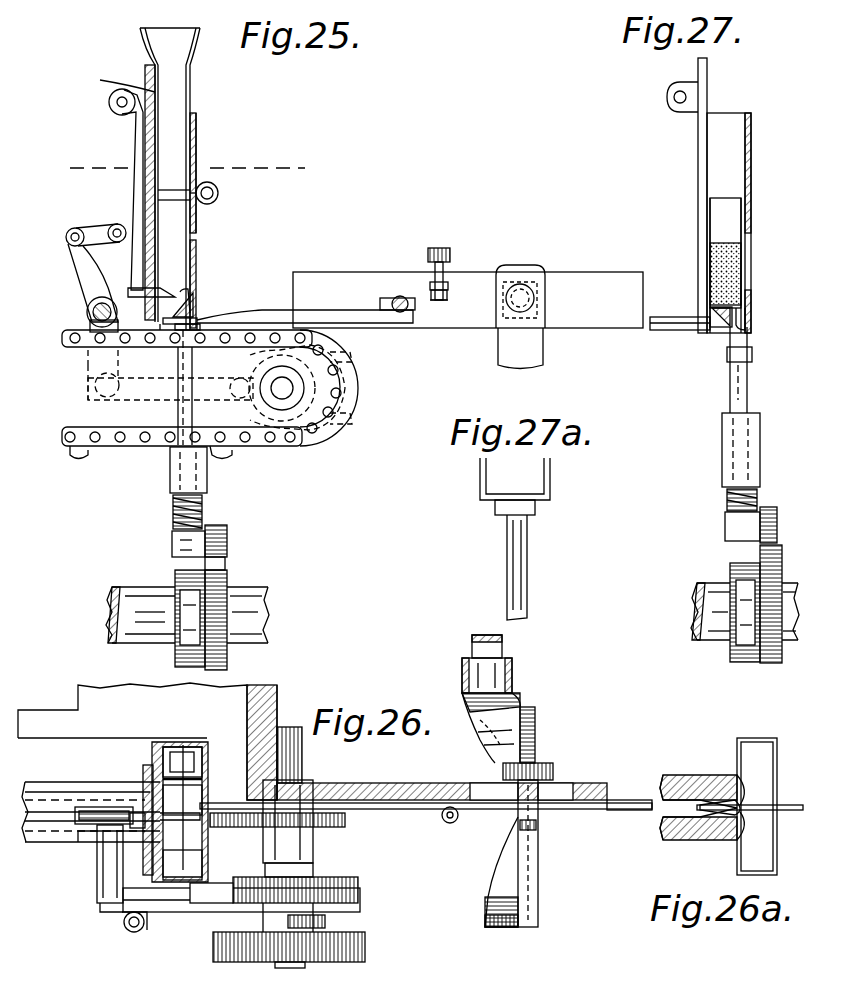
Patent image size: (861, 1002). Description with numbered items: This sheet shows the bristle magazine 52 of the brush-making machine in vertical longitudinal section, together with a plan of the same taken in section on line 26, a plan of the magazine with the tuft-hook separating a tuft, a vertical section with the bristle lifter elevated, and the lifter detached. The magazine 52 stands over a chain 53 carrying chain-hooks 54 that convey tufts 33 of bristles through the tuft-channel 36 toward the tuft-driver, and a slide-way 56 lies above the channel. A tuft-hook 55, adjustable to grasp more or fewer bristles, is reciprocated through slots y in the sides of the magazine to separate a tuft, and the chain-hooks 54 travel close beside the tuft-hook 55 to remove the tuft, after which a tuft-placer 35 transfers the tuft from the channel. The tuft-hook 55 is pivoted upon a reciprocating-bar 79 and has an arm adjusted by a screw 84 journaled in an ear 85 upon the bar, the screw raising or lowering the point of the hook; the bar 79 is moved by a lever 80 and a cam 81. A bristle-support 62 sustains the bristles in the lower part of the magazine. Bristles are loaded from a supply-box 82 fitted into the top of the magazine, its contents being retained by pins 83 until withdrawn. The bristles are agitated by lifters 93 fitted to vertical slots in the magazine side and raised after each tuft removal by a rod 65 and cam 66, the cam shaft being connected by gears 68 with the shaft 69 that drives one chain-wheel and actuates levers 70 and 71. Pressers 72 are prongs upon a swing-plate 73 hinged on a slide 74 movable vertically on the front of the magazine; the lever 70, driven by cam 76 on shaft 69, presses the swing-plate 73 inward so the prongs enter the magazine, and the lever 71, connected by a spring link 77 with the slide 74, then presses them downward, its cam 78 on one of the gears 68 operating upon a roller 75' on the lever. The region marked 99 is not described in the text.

In FIG. 25, the section line 26 is at (187, 169).
In FIG. 25, the supply-box 82 is at (193, 85).
In FIG. 25, the pins 83 is at (220, 195).
In FIG. 25, the swing-plate 73 is at (135, 208).
In FIG. 26, the swing-plate 73 is at (143, 800).
In FIG. 25, the lever 70 is at (82, 290).
In FIG. 25, the chain 53 is at (207, 394).
In FIG. 26, the chain 53 is at (345, 827).
In FIG. 25, the shaft 69 is at (283, 390).
In FIG. 25, the cam 76 is at (310, 375).
In FIG. 26, the cam 76 is at (312, 868).
In FIG. 25, the magazine 52 is at (195, 215).
In FIG. 26, the magazine 52 is at (205, 846).
In FIG. 26A, the magazine 52 is at (760, 738).
In FIG. 25, the pressers 72 is at (185, 292).
In FIG. 26, the pressers 72 is at (168, 768).
In FIG. 25, the bristle-support 62 is at (192, 300).
In FIG. 27, the bristle-support 62 is at (715, 330).
In FIG. 26, the bristle-support 62 is at (183, 745).
In FIG. 25, the chain-hooks 54 is at (195, 322).
In FIG. 26, the chain-hooks 54 is at (200, 808).
In FIG. 25, the rod 65 is at (180, 408).
In FIG. 27, the rod 65 is at (735, 396).
In FIG. 25, the cam 66 is at (222, 580).
In FIG. 27, the cam 66 is at (760, 548).
In FIG. 25, the reciprocating-bar 79 is at (594, 284).
In FIG. 27, the reciprocating-bar 79 is at (680, 323).
In FIG. 26, the reciprocating-bar 79 is at (630, 812).
In FIG. 25, the tuft-hook 55 is at (333, 318).
In FIG. 26, the tuft-hook 55 is at (378, 815).
In FIG. 26A, the tuft-hook 55 is at (791, 798).
In FIG. 25, the screw 84 is at (438, 248).
In FIG. 26, the screw 84 is at (450, 822).
In FIG. 25, the ear 85 is at (449, 290).
In FIG. 25, the lever 80 is at (545, 352).
In FIG. 26, the lever 80 is at (540, 770).
In FIG. 27, the slide-way 56 is at (663, 322).
In FIG. 27, the slots y is at (710, 312).
In FIG. 27, the material 99 is at (727, 272).
In FIG. 27, the lifters 93 is at (745, 332).
In FIG. 27A, the lifters 93 is at (478, 483).
In FIG. 26, the lifters 93 is at (190, 772).
In FIG. 26, the tuft-placer 35 is at (43, 813).
In FIG. 26, the tuft-channel 36 is at (65, 830).
In FIG. 26A, the tuft-channel 36 is at (686, 785).
In FIG. 26, the slide 74 is at (140, 795).
In FIG. 26, the lever 71 is at (185, 912).
In FIG. 26, the spring link 77 is at (126, 928).
In FIG. 26, the roller 75' is at (347, 918).
In FIG. 26, the gears 68 is at (366, 946).
In FIG. 26, the cam 78 is at (252, 925).
In FIG. 26, the cam 81 is at (490, 775).
In FIG. 26A, the tufts 33 is at (736, 775).